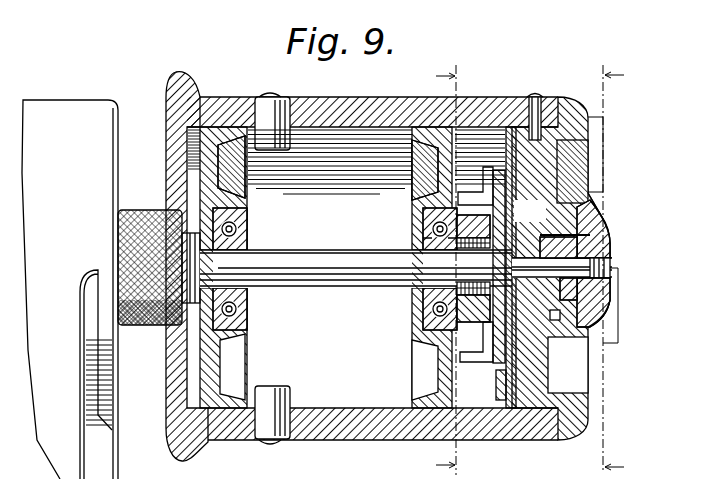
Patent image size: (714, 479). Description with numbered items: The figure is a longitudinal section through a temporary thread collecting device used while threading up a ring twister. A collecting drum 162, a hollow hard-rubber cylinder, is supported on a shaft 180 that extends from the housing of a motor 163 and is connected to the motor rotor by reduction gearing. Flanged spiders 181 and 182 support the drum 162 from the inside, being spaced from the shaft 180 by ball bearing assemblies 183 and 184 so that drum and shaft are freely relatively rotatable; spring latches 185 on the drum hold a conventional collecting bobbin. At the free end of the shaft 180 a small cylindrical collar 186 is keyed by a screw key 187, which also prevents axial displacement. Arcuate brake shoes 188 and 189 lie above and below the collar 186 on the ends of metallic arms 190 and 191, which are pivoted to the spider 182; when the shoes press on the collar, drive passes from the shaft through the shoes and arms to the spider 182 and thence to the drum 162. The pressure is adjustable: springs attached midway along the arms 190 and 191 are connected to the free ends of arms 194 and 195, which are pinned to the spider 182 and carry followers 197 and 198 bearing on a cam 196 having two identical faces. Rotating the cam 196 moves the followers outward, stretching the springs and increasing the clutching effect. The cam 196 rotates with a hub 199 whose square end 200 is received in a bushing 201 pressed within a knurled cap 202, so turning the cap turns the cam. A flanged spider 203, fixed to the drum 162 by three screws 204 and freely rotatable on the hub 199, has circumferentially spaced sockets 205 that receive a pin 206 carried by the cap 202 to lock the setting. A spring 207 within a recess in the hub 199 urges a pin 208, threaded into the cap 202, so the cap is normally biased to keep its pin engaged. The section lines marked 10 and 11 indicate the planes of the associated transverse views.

The motor 163 is at (75, 113).
The shaft 180 is at (337, 268).
The flanged spider 181 is at (187, 171).
The collecting drum 162 is at (356, 86).
The arm 194 is at (423, 443).
The spring latch 185 is at (262, 95).
The ball bearing assembly 183 is at (248, 242).
The metallic arm 190 is at (420, 200).
The flanged spider 182 is at (423, 127).
The ball bearing assembly 184 is at (423, 213).
The brake shoe 188 is at (421, 240).
The brake shoe 189 is at (440, 347).
The metallic arm 191 is at (447, 355).
The screw key 187 is at (453, 257).
The arm 195 is at (478, 103).
The cylindrical collar 186 is at (486, 350).
The follower 197 is at (497, 372).
The follower 198 is at (509, 100).
The cam 196 is at (503, 441).
The screw 204 is at (545, 92).
The flanged spider 203 is at (585, 168).
The socket 205 is at (562, 210).
The pin 206 is at (594, 210).
The spring 207 is at (592, 237).
The square end 200 is at (607, 243).
The pin 208 is at (613, 255).
The bushing 201 is at (608, 297).
The knurled cap 202 is at (595, 318).
The hub 199 is at (523, 313).
The section line 10 is at (458, 272).
The section line 11 is at (601, 270).